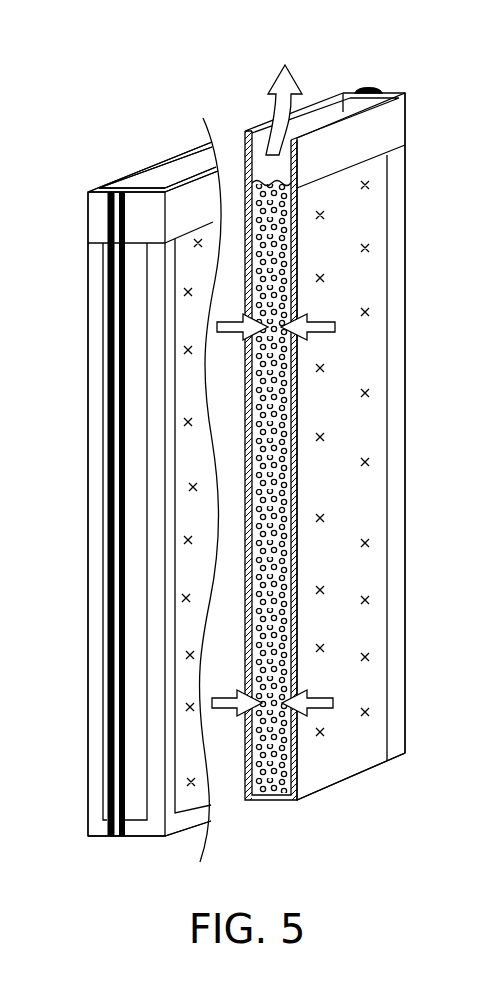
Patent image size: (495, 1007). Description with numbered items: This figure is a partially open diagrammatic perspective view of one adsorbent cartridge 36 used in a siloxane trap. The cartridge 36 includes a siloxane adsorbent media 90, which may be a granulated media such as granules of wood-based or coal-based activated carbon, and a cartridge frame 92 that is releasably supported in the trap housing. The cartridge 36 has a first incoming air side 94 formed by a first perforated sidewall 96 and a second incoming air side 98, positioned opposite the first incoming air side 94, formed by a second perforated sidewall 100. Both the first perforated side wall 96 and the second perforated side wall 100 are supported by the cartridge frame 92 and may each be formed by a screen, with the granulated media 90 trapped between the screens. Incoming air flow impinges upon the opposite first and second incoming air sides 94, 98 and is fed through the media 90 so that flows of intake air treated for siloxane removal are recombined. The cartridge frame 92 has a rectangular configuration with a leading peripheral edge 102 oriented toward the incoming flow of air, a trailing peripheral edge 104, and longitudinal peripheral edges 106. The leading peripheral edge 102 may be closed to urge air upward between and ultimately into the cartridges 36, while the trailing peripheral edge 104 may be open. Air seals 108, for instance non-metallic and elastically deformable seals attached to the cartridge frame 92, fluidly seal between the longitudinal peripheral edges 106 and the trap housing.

The adsorbent cartridge 36 is at (84, 182).
The siloxane adsorbent media 90 is at (280, 430).
The cartridge frame 92 is at (318, 792).
The first incoming air side 94 is at (362, 519).
The first perforated sidewall 96 is at (343, 491).
The second incoming air side 98 is at (241, 541).
The second perforated sidewall 100 is at (246, 423).
The leading peripheral edge 102 is at (169, 837).
The trailing peripheral edge 104 is at (150, 165).
The longitudinal peripheral edges 106 is at (89, 397).
The air seals 108 is at (106, 284).